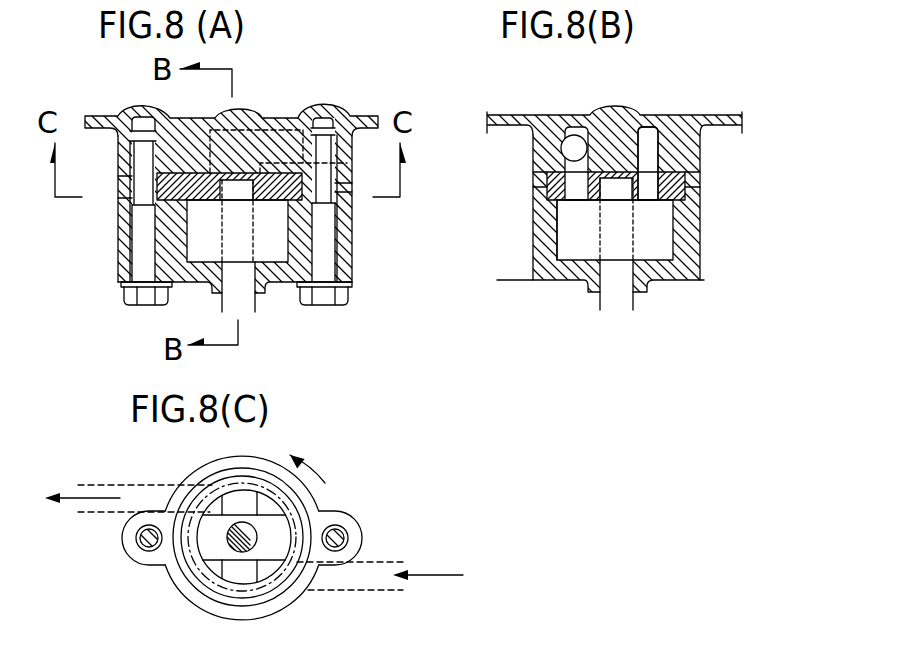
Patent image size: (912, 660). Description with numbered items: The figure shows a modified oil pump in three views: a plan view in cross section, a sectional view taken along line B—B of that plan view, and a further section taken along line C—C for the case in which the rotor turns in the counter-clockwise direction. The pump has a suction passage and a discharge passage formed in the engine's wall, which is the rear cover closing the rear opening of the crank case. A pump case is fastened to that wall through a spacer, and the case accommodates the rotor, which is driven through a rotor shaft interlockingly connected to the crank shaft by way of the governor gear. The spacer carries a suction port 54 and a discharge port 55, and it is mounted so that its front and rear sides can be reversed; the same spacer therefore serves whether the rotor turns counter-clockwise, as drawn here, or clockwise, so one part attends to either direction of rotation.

The suction port 54 is at (218, 560).
The discharge port 55 is at (270, 500).